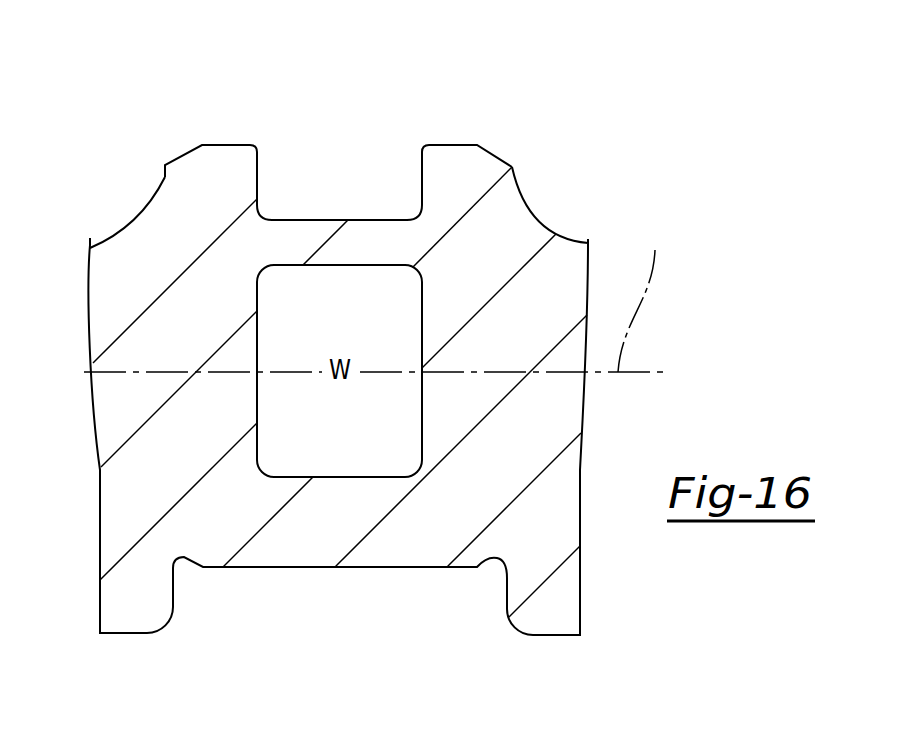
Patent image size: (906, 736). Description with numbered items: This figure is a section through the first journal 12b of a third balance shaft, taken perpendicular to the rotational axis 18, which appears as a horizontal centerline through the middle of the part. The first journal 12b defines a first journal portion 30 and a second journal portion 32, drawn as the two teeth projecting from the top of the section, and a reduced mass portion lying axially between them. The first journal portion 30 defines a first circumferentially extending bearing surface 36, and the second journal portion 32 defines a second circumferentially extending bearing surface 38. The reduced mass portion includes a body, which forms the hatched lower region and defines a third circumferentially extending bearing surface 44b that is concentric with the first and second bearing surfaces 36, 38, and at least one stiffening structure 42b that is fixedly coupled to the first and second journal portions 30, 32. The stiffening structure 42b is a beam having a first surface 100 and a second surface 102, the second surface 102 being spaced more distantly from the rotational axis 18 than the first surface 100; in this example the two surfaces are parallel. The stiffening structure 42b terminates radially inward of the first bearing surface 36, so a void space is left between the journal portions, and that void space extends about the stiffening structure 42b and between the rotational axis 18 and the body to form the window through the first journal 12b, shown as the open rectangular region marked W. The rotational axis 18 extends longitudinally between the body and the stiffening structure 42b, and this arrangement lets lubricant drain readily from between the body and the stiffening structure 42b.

The first journal 12b is at (535, 127).
The first journal portion 30 is at (211, 106).
The first circumferentially extending bearing surface 36 is at (225, 145).
The second journal portion 32 is at (467, 106).
The second circumferentially extending bearing surface 38 is at (452, 145).
The second surface 102 is at (323, 220).
The stiffening structure 42b is at (370, 240).
The first surface 100 is at (318, 267).
The third circumferentially extending bearing surface 44b is at (302, 567).
The rotational axis 18 is at (640, 297).